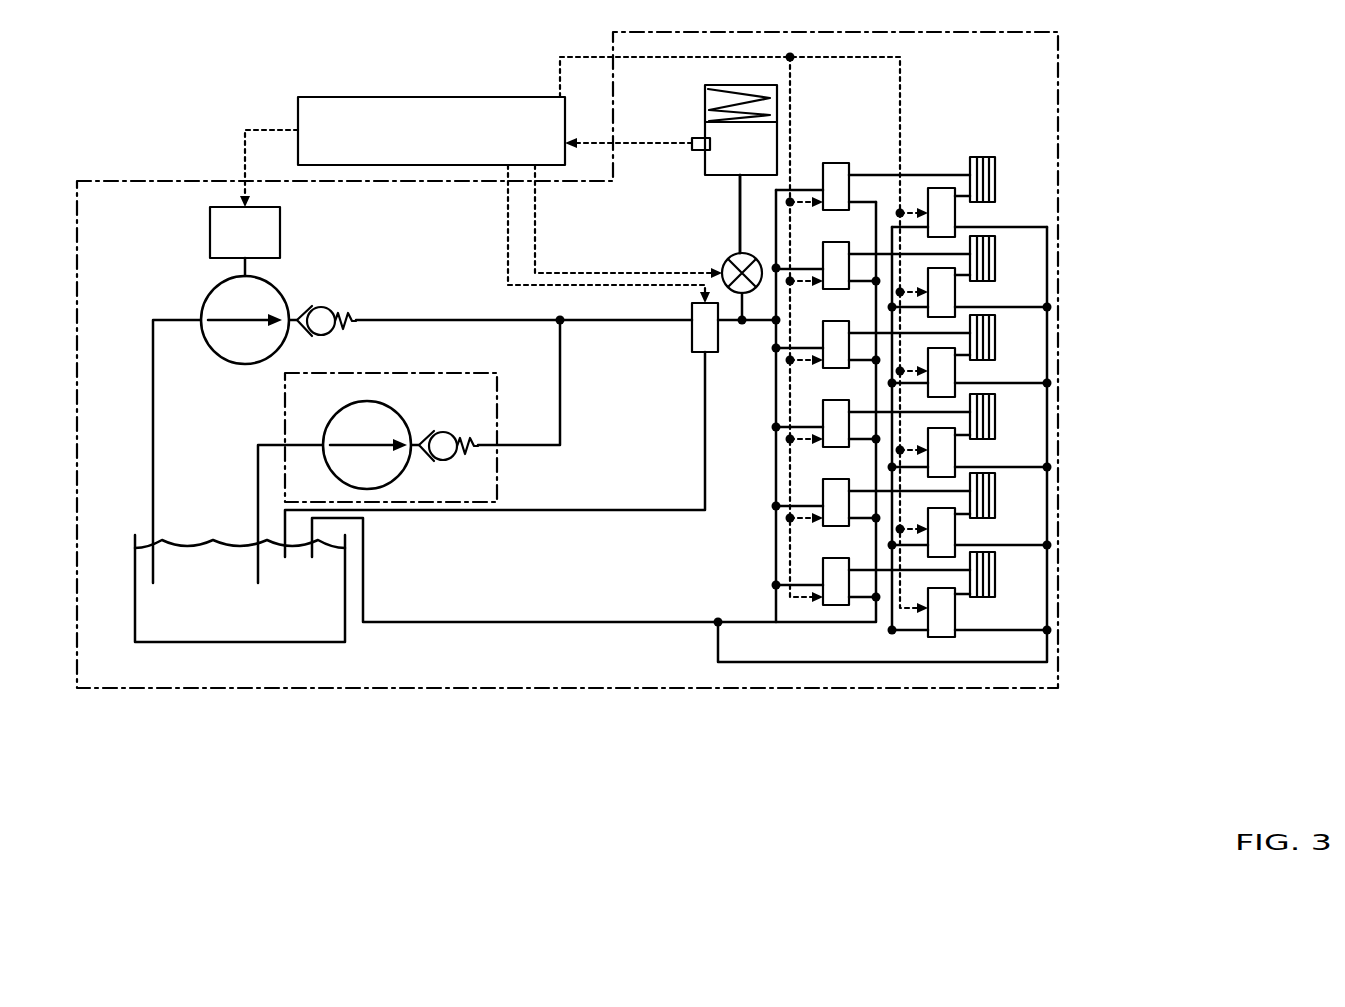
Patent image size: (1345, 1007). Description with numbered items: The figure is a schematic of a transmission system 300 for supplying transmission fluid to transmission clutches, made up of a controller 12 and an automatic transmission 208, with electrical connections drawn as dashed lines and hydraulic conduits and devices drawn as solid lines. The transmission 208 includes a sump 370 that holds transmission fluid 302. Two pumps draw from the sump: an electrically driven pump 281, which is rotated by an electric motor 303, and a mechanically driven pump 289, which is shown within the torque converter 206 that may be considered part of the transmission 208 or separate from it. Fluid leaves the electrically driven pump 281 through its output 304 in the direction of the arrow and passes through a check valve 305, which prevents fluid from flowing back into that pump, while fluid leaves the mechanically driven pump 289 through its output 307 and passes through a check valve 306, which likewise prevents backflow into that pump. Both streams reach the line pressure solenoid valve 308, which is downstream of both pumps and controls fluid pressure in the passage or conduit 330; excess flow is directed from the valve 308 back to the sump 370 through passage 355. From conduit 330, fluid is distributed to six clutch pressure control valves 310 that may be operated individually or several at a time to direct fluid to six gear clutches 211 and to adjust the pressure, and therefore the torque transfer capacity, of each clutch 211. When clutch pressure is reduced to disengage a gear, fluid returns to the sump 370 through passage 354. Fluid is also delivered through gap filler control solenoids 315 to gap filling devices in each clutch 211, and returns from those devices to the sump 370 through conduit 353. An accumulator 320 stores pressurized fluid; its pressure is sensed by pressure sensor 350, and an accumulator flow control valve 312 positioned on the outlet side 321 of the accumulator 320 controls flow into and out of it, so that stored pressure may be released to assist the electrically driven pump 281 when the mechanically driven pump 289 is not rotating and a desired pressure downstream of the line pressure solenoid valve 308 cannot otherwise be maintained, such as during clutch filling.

The transmission system 300 is at (104, 60).
The controller 12 is at (344, 97).
The electric motor 303 is at (245, 241).
The output of electrically driven pump 304 is at (291, 318).
The check valve 305 is at (323, 306).
The electrically driven pump 281 is at (234, 362).
The torque converter 206 is at (368, 373).
The output of mechanically driven pump 307 is at (416, 437).
The check valve 306 is at (442, 432).
The mechanically driven pump 289 is at (343, 477).
The transmission fluid 302 is at (240, 576).
The sump 370 is at (247, 643).
The passage or conduit 355 is at (497, 513).
The passage 354 is at (488, 624).
The line pressure solenoid valve 308 is at (693, 352).
The passage or conduit 330 is at (730, 323).
The accumulator flow control valve 312 is at (734, 255).
The outlet side of accumulator 321 is at (741, 178).
The accumulator 320 is at (723, 178).
The pressure sensor 350 is at (693, 152).
The clutch pressure control valves 310 is at (830, 164).
The gear clutches 211 is at (995, 168).
The gap filler control solenoids 315 is at (955, 222).
The conduit or passage 353 is at (793, 663).
The automatic transmission 208 is at (1063, 692).